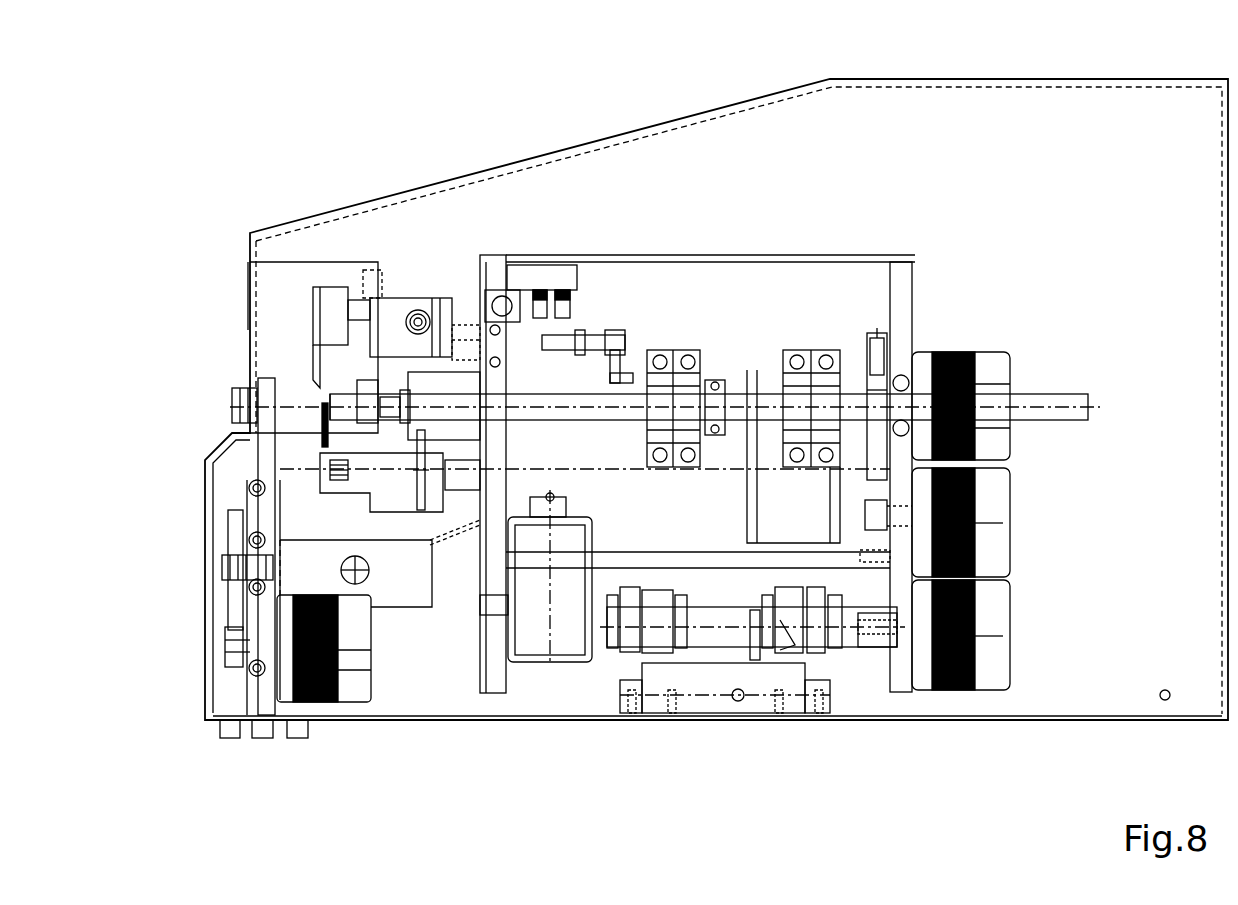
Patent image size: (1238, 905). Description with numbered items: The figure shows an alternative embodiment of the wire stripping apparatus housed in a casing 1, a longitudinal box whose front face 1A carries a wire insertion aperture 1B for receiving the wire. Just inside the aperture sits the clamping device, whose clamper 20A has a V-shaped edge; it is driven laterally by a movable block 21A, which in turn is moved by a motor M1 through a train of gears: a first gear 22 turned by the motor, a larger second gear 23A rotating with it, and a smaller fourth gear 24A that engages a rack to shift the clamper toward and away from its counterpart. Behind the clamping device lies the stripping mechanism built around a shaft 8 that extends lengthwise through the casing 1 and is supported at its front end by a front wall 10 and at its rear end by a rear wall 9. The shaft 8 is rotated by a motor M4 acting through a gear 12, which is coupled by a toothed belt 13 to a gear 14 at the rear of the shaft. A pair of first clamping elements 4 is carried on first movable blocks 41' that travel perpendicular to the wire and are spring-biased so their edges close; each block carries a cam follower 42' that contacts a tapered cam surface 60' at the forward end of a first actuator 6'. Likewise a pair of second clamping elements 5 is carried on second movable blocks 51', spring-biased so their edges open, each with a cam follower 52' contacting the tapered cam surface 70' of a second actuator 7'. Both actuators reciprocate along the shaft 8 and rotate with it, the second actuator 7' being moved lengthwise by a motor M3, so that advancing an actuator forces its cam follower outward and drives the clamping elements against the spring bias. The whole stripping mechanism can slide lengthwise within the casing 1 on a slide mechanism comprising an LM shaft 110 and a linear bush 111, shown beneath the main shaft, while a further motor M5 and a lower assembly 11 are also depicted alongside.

The casing 1 is at (686, 108).
The front face 1A is at (248, 300).
The wire insertion aperture 1B is at (232, 403).
The clamper 20A is at (265, 378).
The first clamping element 4 is at (312, 372).
The second clamping element 5 is at (315, 420).
The first movable block 41' is at (402, 288).
The cam follower 42' is at (423, 285).
The tapered cam surface 60' is at (466, 290).
The first actuator 6' is at (585, 324).
The shaft 8 is at (850, 360).
The gear 14 is at (891, 340).
The motor M3 is at (995, 366).
The toothed belt 13 is at (878, 450).
The motor M4 is at (988, 513).
The gear 12 is at (877, 533).
The motor M5 is at (988, 627).
The movable block 21A is at (262, 512).
The fourth gear 24A is at (237, 560).
The second gear 23A is at (237, 602).
The first gear 22 is at (230, 634).
The cam follower 52' is at (363, 483).
The second movable block 51' is at (361, 484).
The tapered cam surface 70' is at (455, 510).
The second actuator 7' is at (578, 574).
The motor M1 is at (347, 692).
The front wall 10 is at (492, 693).
The lower shaft assembly 11 is at (708, 683).
The linear bush 111 is at (818, 652).
The LM shaft 110 is at (862, 645).
The rear wall 9 is at (900, 692).